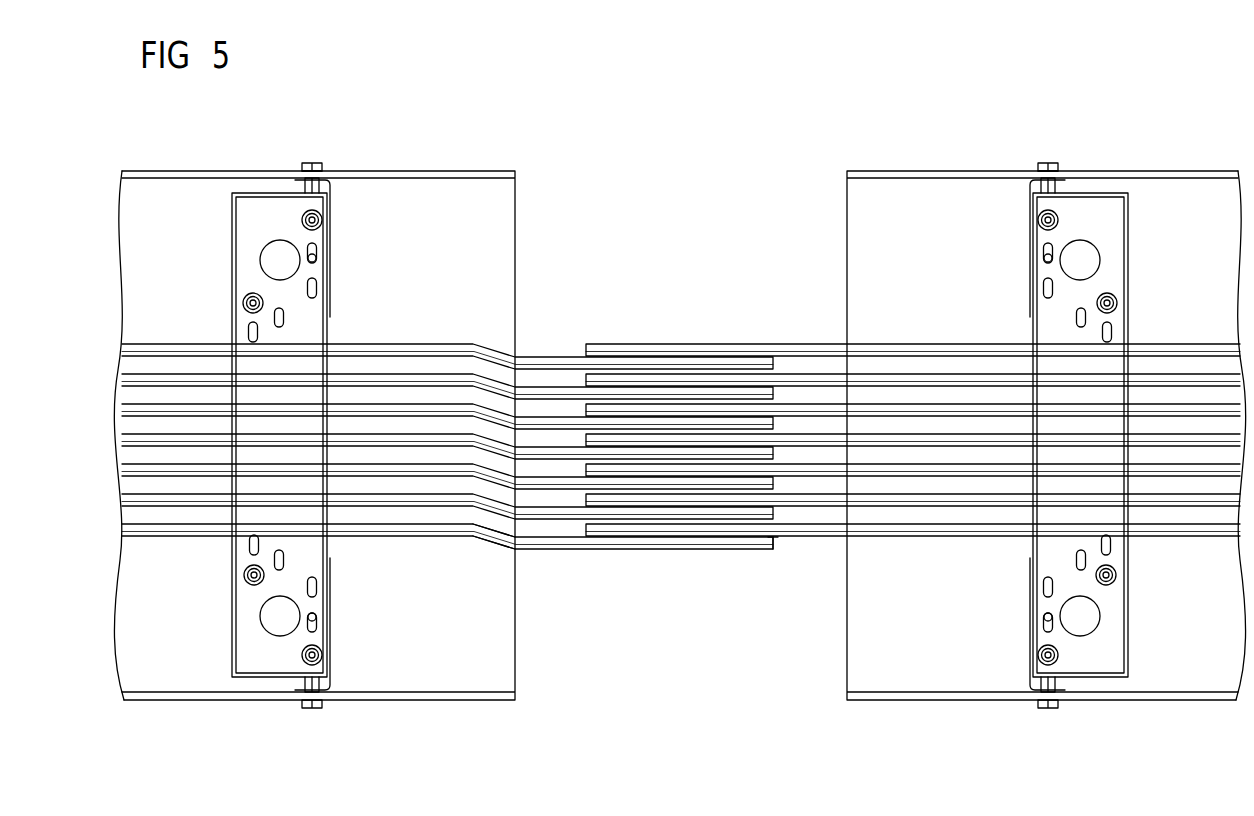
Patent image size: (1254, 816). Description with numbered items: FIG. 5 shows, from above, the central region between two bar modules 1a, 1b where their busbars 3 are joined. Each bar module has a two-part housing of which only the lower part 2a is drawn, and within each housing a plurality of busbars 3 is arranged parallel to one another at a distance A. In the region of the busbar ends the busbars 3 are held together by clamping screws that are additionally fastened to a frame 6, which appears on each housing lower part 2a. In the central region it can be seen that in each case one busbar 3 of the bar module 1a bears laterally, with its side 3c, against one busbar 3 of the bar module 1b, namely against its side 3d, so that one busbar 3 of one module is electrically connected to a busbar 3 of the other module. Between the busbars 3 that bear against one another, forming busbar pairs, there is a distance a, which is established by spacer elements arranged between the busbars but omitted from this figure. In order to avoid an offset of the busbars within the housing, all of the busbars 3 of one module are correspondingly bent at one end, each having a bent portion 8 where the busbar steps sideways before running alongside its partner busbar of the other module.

The bar module 1a is at (284, 146).
The bar module 1b is at (1104, 146).
The lower part of the housing 2a is at (427, 685).
The busbar 3 is at (153, 344).
The side of busbar 3c is at (752, 541).
The side of busbar 3d is at (763, 537).
The frame 6 is at (243, 237).
The bent portion 8 is at (482, 554).
The distance between busbars bearing against one another a is at (686, 478).
The distance between parallel busbars A is at (887, 463).